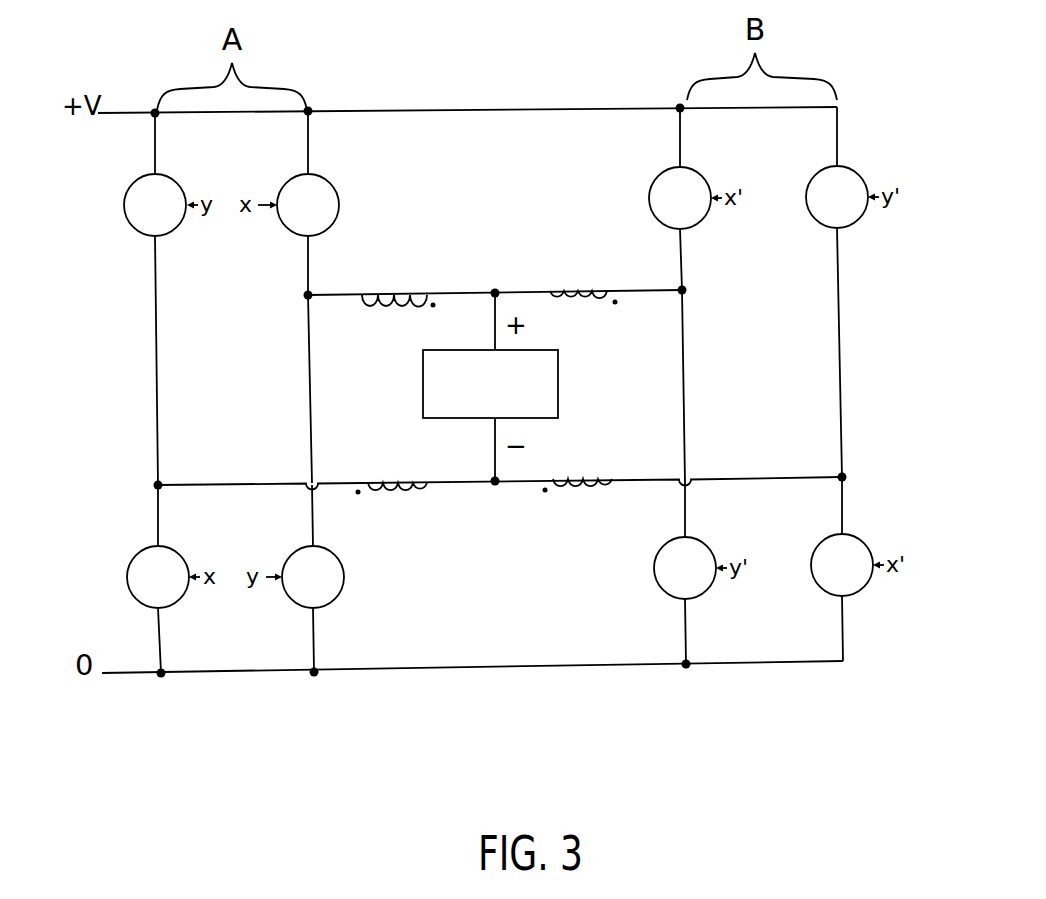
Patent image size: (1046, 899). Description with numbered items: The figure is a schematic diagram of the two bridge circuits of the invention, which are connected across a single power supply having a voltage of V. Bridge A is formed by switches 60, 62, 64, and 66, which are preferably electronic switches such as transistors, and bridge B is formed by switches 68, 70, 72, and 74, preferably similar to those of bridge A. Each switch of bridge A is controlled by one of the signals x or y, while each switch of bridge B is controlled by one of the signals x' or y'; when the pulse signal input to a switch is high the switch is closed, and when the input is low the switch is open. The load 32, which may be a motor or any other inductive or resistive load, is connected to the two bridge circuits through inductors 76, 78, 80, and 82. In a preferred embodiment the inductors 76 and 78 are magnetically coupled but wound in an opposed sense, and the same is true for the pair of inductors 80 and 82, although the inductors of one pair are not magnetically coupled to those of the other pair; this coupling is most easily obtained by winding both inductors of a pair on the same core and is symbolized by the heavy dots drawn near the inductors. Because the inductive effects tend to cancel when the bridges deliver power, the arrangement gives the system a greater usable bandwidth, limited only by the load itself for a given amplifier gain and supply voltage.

The load 32 is at (547, 392).
The switch 60 is at (142, 197).
The switch 62 is at (143, 570).
The switch 64 is at (312, 195).
The switch 66 is at (328, 567).
The switch 68 is at (662, 195).
The switch 70 is at (673, 563).
The switch 72 is at (837, 188).
The switch 74 is at (845, 557).
The inductor 76 is at (403, 292).
The inductor 78 is at (587, 291).
The inductor 80 is at (405, 479).
The inductor 82 is at (592, 478).